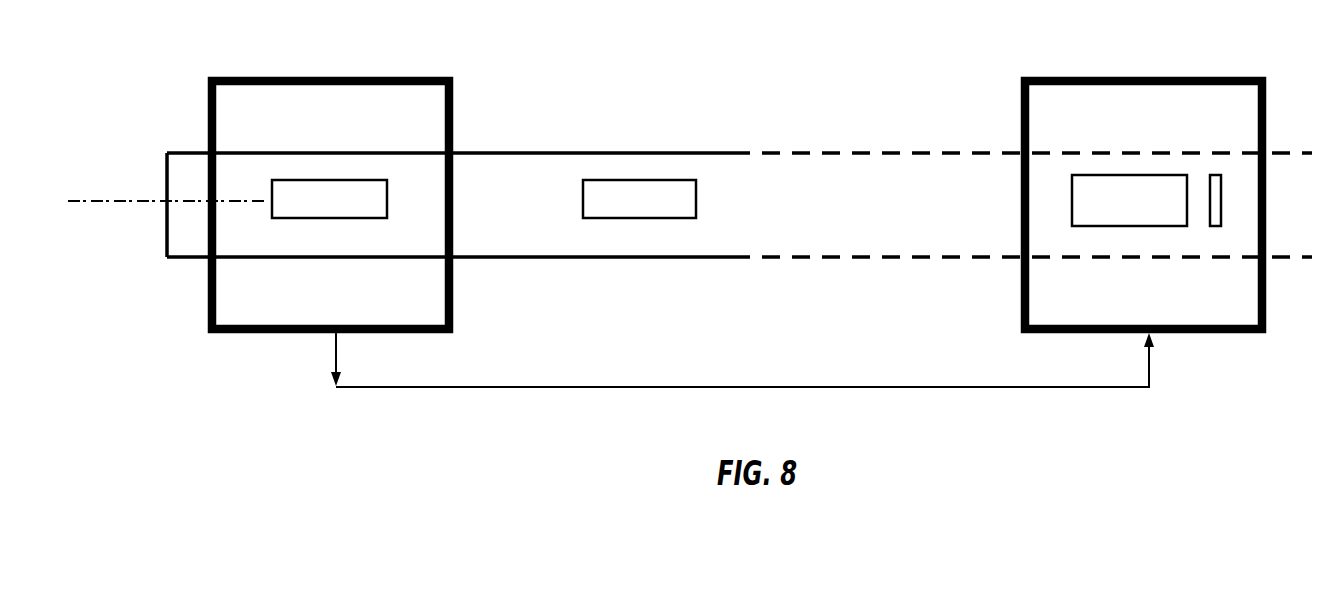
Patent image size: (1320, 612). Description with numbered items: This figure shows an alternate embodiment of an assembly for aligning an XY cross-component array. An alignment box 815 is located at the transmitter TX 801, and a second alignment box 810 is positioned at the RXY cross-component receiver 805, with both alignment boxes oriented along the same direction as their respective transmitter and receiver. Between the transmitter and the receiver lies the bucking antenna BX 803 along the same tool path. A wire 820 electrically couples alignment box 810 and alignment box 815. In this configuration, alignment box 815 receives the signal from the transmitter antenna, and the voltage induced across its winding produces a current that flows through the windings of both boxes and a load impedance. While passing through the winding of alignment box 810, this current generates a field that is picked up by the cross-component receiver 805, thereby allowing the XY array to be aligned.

The TX 801 is at (295, 188).
The bucking antenna 803 is at (679, 197).
The RXY cross-component receiver 805 is at (1171, 215).
The alignment box 810 is at (1228, 77).
The alignment box 815 is at (405, 77).
The wire 820 is at (930, 387).